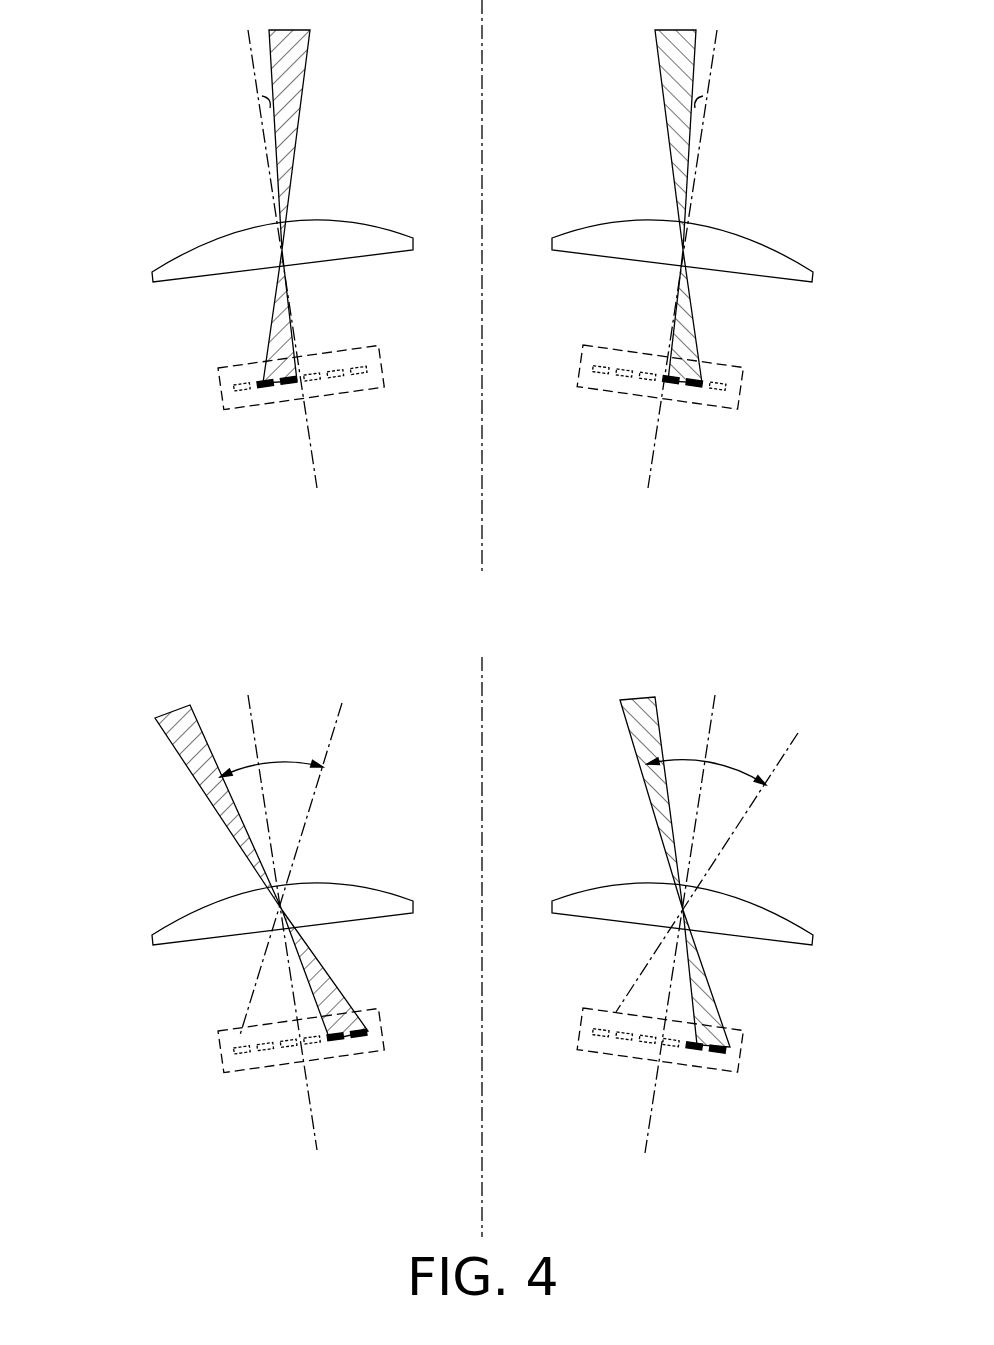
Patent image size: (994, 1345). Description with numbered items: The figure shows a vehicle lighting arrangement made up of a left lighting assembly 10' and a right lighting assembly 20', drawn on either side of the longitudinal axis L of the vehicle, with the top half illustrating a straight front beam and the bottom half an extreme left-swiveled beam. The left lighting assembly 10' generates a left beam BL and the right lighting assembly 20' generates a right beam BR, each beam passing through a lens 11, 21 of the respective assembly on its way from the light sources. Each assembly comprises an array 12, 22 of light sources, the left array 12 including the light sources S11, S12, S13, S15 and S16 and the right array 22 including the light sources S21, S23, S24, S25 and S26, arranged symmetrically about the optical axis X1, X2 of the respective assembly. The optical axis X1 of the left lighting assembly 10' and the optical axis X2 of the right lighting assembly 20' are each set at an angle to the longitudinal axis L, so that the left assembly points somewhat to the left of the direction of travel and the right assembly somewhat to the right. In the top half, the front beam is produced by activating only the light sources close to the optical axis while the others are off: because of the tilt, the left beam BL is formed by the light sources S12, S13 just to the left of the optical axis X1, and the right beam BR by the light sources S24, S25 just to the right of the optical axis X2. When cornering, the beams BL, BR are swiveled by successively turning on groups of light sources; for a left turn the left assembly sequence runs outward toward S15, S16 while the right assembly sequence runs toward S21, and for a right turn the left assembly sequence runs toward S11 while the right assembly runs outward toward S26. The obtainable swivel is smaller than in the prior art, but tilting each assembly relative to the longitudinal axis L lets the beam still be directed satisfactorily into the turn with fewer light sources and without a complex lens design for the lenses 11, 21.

The left lighting assembly 10' is at (99, 388).
The right lighting assembly 20' is at (858, 398).
The optical axis X1 is at (248, 50).
The optical axis X2 is at (717, 50).
The left beam BL is at (298, 80).
The right beam BR is at (667, 80).
The left lens 11 is at (170, 265).
The right lens 21 is at (795, 265).
The array of light sources 12 is at (218, 388).
The array of light sources 22 is at (747, 388).
The light source S11 is at (233, 391).
The light source S12 is at (256, 388).
The light source S13 is at (280, 385).
The light source S15 is at (345, 1041).
The light source S16 is at (367, 378).
The light source S21 is at (592, 390).
The light source S23 is at (647, 382).
The light source S24 is at (682, 383).
The light source S25 is at (707, 385).
The light source S26 is at (727, 380).
The longitudinal axis L is at (483, 520).